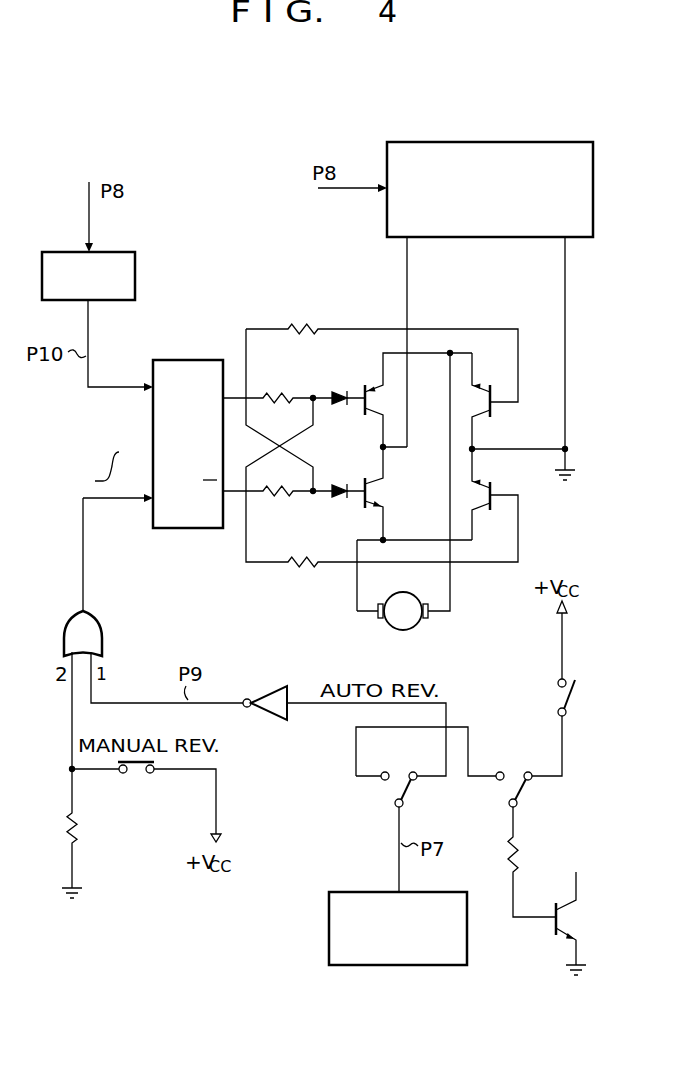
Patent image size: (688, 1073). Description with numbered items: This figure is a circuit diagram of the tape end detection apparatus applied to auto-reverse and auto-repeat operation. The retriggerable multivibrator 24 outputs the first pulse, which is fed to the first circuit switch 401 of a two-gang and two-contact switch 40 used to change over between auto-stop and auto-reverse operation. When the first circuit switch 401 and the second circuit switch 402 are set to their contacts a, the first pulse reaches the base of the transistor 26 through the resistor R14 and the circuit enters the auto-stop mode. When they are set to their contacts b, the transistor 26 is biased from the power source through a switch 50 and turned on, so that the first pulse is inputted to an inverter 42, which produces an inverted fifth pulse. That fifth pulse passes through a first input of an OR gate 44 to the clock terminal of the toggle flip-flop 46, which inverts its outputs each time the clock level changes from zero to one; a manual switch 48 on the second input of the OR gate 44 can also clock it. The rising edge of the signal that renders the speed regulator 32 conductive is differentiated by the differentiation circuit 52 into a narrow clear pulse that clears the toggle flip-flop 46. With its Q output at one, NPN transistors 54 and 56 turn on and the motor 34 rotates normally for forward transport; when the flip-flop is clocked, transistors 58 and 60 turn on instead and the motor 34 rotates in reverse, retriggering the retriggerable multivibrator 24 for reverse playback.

The speed regulator 32 is at (556, 153).
The differentiation circuit 52 is at (136, 278).
The toggle flip-flop 46 is at (193, 530).
The NPN transistor 54 is at (377, 384).
The NPN transistor 58 is at (373, 492).
The NPN transistor 60 is at (485, 388).
The NPN transistor 56 is at (480, 508).
The motor 34 is at (415, 622).
The OR gate 44 is at (88, 633).
The inverter 42 is at (278, 688).
The manual switch 48 is at (137, 775).
The two-gang and two-contact switch 40 is at (475, 776).
The first circuit switch 401 is at (385, 787).
The second circuit switch 402 is at (525, 793).
The switch 50 is at (575, 695).
The resistor R14 is at (520, 852).
The transistor 26 is at (575, 917).
The retriggerable multivibrator 24 is at (352, 965).